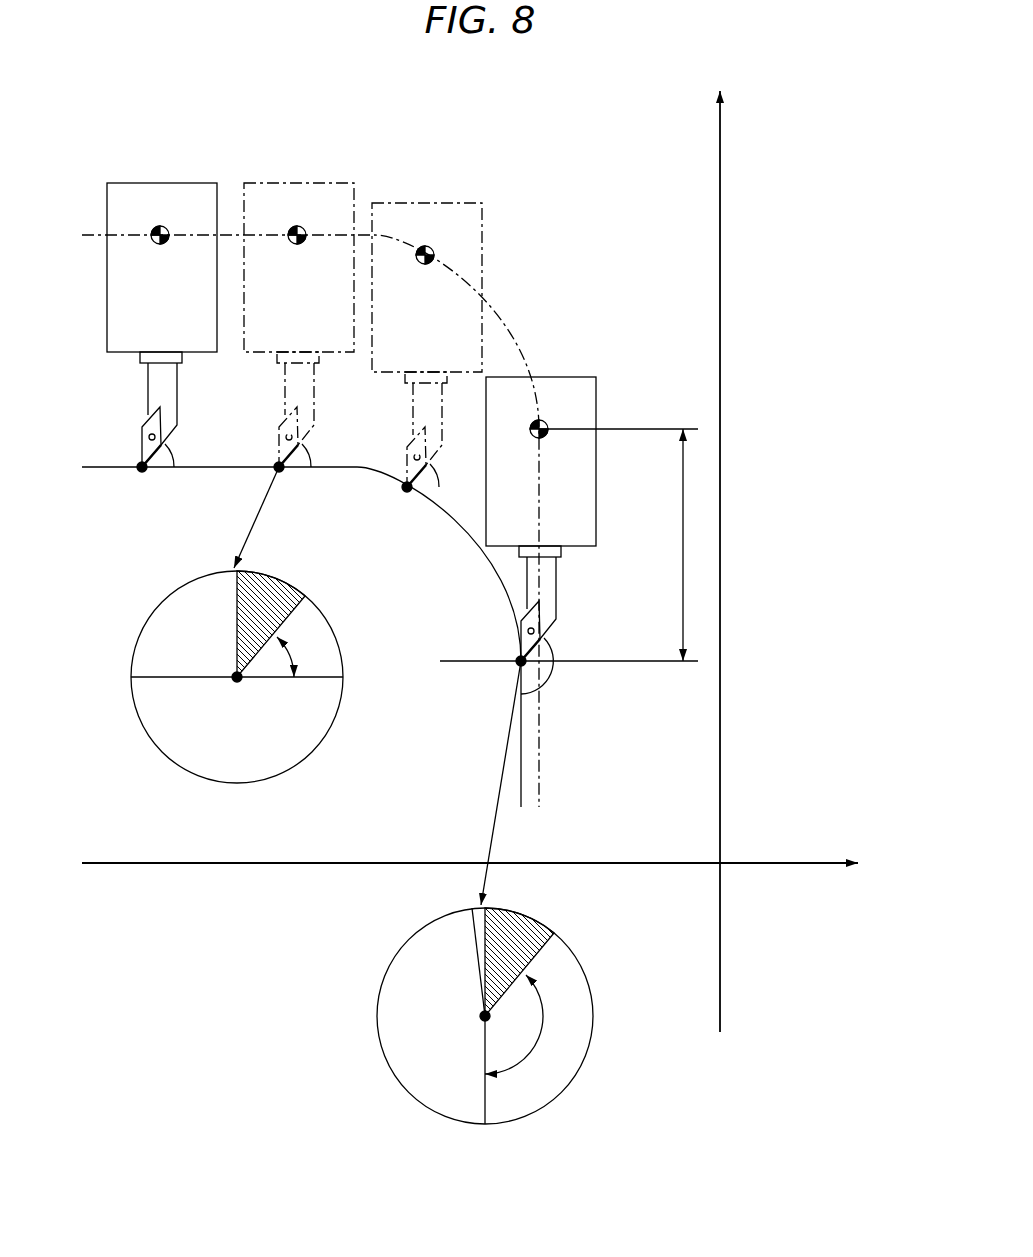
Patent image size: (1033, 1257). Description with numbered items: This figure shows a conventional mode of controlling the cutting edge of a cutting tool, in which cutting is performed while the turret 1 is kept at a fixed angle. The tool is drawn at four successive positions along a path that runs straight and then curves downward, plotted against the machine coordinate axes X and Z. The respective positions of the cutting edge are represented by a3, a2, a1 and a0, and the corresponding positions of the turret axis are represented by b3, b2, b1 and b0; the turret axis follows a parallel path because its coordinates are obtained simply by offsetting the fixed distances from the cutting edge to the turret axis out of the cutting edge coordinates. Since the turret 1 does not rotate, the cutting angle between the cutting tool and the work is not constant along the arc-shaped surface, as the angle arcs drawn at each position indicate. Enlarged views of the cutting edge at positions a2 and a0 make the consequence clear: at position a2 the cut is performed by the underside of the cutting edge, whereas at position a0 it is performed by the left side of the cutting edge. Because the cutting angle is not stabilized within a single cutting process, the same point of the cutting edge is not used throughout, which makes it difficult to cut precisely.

The turret 1 is at (417, 455).
The turret axis position b0 is at (542, 425).
The turret axis position b1 is at (428, 251).
The turret axis position b2 is at (300, 232).
The turret axis position b3 is at (163, 232).
The cutting edge position a0 is at (507, 672).
The cutting edge position a1 is at (408, 500).
The cutting edge position a2 is at (289, 481).
The cutting edge position a3 is at (142, 481).
The X axis X is at (720, 74).
The Z axis Z is at (873, 864).